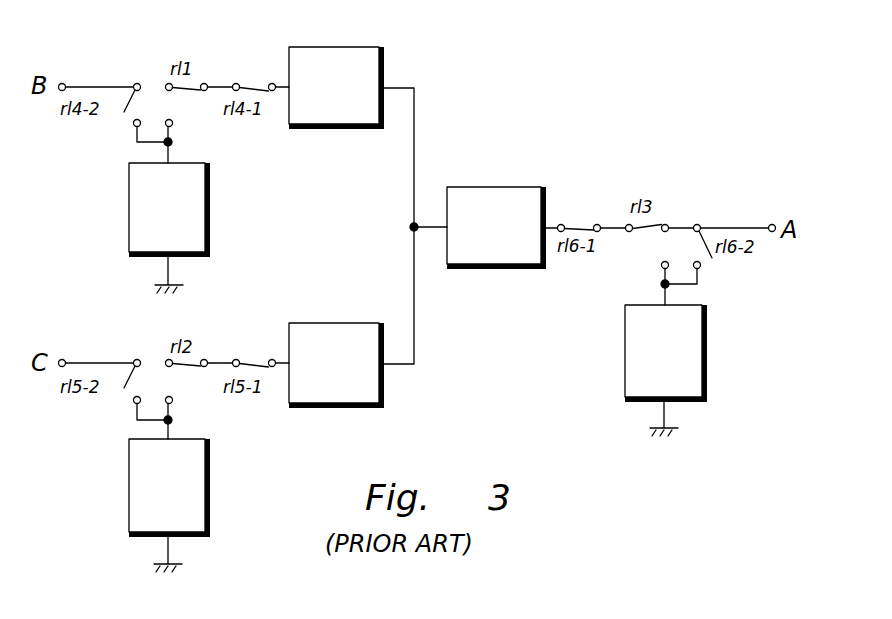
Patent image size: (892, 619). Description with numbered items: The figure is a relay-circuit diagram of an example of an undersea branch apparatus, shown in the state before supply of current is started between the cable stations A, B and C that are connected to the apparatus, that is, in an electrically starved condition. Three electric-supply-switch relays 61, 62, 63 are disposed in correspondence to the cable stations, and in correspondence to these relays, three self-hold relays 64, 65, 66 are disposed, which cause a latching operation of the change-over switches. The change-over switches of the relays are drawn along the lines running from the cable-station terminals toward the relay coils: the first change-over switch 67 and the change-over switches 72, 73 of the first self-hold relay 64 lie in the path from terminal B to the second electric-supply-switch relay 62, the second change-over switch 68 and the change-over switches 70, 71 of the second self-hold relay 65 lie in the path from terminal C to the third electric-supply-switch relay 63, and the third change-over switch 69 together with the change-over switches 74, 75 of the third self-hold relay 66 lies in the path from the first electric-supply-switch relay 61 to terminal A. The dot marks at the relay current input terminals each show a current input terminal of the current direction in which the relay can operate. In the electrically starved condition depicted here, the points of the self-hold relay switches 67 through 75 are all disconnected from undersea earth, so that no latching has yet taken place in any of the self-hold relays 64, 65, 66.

The electric-supply-switch relay RL1 61 is at (509, 187).
The electric-supply-switch relay RL2 62 is at (321, 47).
The electric-supply-switch relay RL3 63 is at (369, 298).
The self-hold relay RL4 64 is at (129, 216).
The self-hold relay RL5 65 is at (129, 495).
The self-hold relay RL6 66 is at (707, 345).
The change-over switch rl1 67 is at (191, 91).
The change-over switch rl2 68 is at (191, 367).
The change-over switch rl3 69 is at (656, 223).
The change-over switch rl5-1 70 is at (254, 362).
The change-over switch rl5-2 71 is at (126, 390).
The change-over switch rl4-1 72 is at (255, 89).
The change-over switch rl4-2 73 is at (126, 114).
The change-over switch rl6-1 74 is at (581, 226).
The change-over switch rl6-2 75 is at (712, 258).